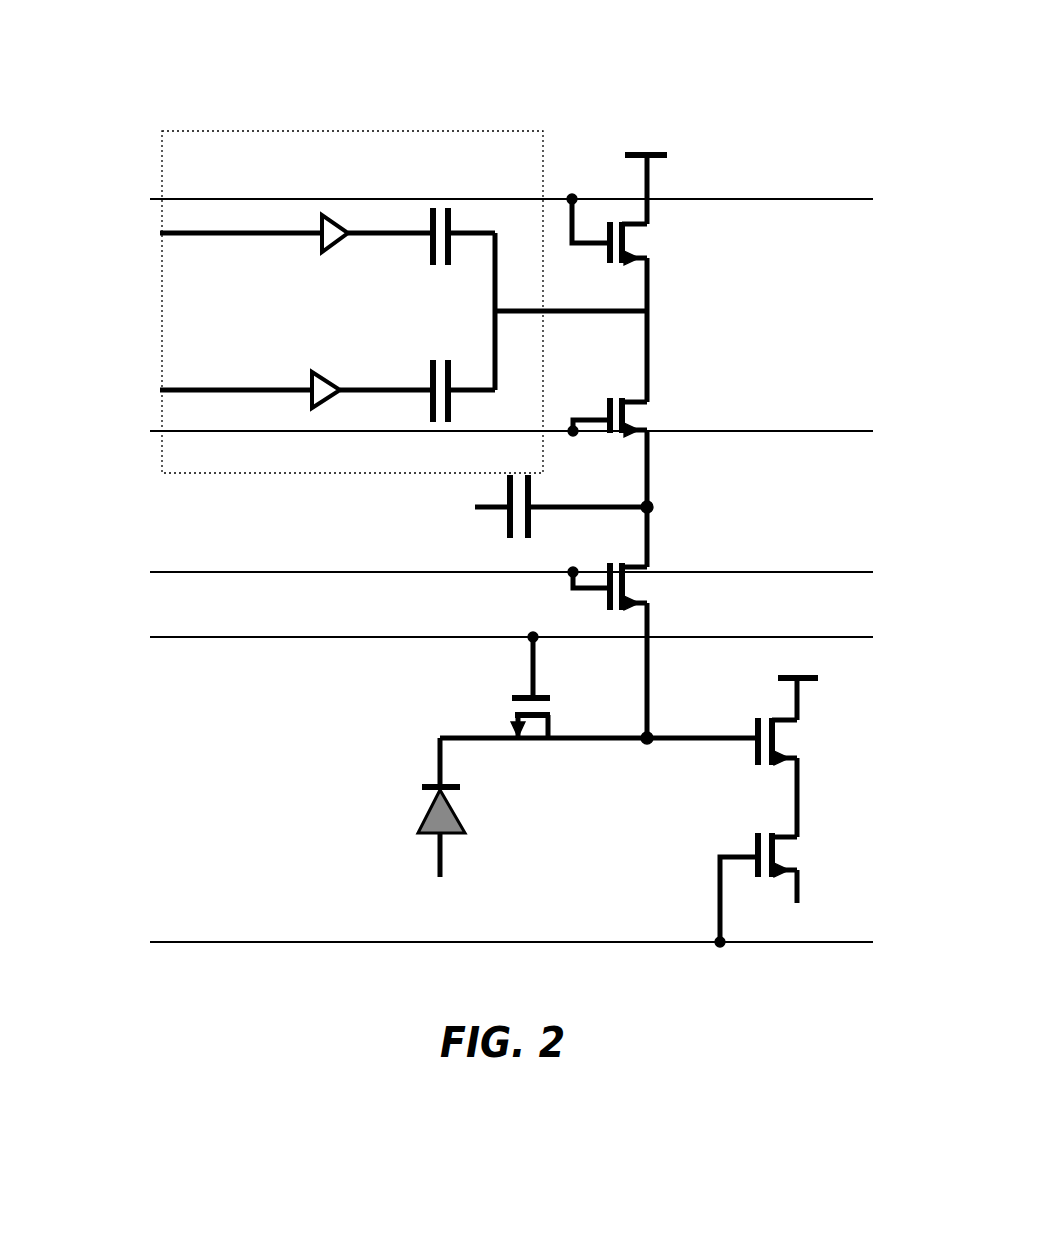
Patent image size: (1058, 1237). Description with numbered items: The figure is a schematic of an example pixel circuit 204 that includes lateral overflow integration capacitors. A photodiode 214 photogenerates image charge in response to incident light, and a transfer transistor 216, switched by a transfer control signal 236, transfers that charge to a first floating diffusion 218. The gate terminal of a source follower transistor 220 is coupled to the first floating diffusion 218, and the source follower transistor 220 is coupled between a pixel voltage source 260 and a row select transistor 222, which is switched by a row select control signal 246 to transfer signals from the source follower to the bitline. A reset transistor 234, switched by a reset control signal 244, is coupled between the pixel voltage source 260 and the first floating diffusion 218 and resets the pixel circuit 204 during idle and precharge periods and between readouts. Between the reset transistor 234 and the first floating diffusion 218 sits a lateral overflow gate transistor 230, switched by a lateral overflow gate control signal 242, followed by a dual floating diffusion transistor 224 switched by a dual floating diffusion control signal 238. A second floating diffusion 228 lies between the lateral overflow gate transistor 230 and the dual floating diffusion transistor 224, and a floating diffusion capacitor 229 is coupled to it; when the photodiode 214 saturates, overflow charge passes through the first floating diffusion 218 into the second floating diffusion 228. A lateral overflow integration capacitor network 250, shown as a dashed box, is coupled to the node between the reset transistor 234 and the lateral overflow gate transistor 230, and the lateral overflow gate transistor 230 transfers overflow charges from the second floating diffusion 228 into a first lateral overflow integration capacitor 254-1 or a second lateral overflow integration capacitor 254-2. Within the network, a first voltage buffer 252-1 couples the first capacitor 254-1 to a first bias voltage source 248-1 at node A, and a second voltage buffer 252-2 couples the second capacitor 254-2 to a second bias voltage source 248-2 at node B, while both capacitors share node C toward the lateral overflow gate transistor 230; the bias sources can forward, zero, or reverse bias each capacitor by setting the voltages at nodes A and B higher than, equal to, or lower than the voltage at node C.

The pixel circuit 204 is at (237, 33).
The photodiode 214 is at (407, 818).
The transfer transistor TX 216 is at (477, 667).
The first floating diffusion FD1 218 is at (654, 803).
The source follower transistor SF 220 is at (861, 733).
The row select transistor RS 222 is at (868, 863).
The dual floating diffusion transistor DFD 224 is at (745, 590).
The second floating diffusion FD2 228 is at (743, 510).
The floating diffusion capacitor FDC 229 is at (483, 559).
The lateral overflow gate transistor LFG 230 is at (741, 413).
The reset transistor RST 234 is at (741, 246).
The transfer control signal TX 236 is at (105, 640).
The dual floating diffusion control signal DFD 238 is at (100, 574).
The lateral overflow gate control signal LFG 242 is at (100, 433).
The reset control signal RST 244 is at (100, 201).
The row select control signal RS 246 is at (112, 944).
The first bias voltage source Vcap-1 248-1 is at (92, 235).
The second bias voltage source Vcap-2 248-2 is at (92, 392).
The lateral overflow integration capacitor (LOFIC) network 250 is at (336, 476).
The first voltage buffer 252-1 is at (312, 241).
The second voltage buffer 252-2 is at (312, 381).
The first LOFIC CAP1 254-1 is at (401, 181).
The second LOFIC CAP2 254-2 is at (401, 448).
The pixel voltage source Pixel VDD 260 is at (890, 663).